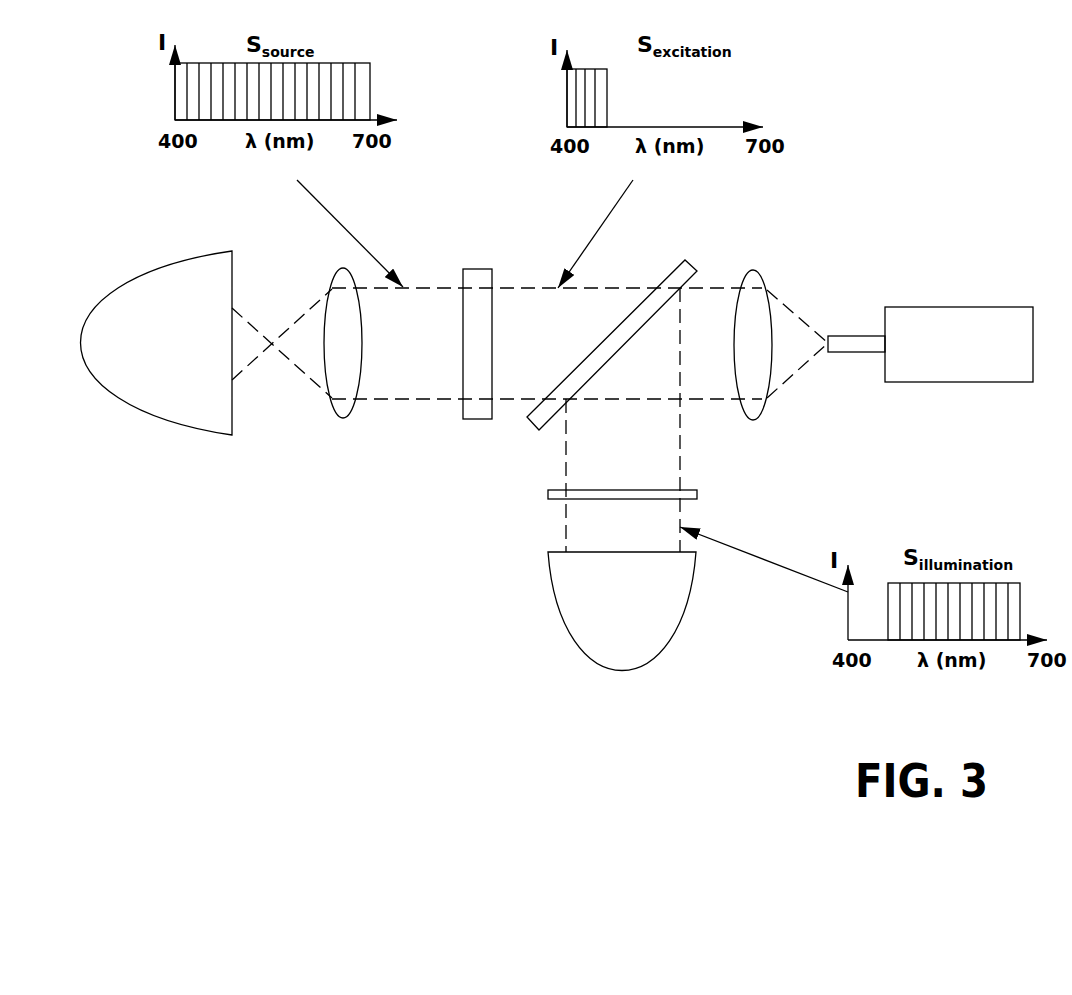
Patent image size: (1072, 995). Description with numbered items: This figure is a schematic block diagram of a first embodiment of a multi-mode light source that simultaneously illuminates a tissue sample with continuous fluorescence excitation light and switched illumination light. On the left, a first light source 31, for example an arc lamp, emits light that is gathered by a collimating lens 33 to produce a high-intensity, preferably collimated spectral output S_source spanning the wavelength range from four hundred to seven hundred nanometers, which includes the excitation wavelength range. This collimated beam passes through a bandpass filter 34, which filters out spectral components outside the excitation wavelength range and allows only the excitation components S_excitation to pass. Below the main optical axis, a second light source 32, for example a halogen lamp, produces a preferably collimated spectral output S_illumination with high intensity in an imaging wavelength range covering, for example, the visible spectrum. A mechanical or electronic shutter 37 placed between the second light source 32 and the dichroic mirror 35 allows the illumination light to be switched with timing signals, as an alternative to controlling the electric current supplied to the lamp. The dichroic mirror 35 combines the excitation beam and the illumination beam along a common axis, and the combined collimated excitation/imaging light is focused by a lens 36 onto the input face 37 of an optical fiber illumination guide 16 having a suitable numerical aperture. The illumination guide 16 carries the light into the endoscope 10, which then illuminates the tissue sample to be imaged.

The endoscope 10 is at (923, 307).
The illumination guide 16 is at (852, 336).
The first light source 31 is at (160, 423).
The second light source 32 is at (563, 617).
The collimating lens 33 is at (342, 418).
The bandpass filter 34 is at (473, 418).
The dichroic mirror 35 is at (691, 265).
The lens 36 is at (753, 270).
The shutter / input face 37 is at (548, 499).